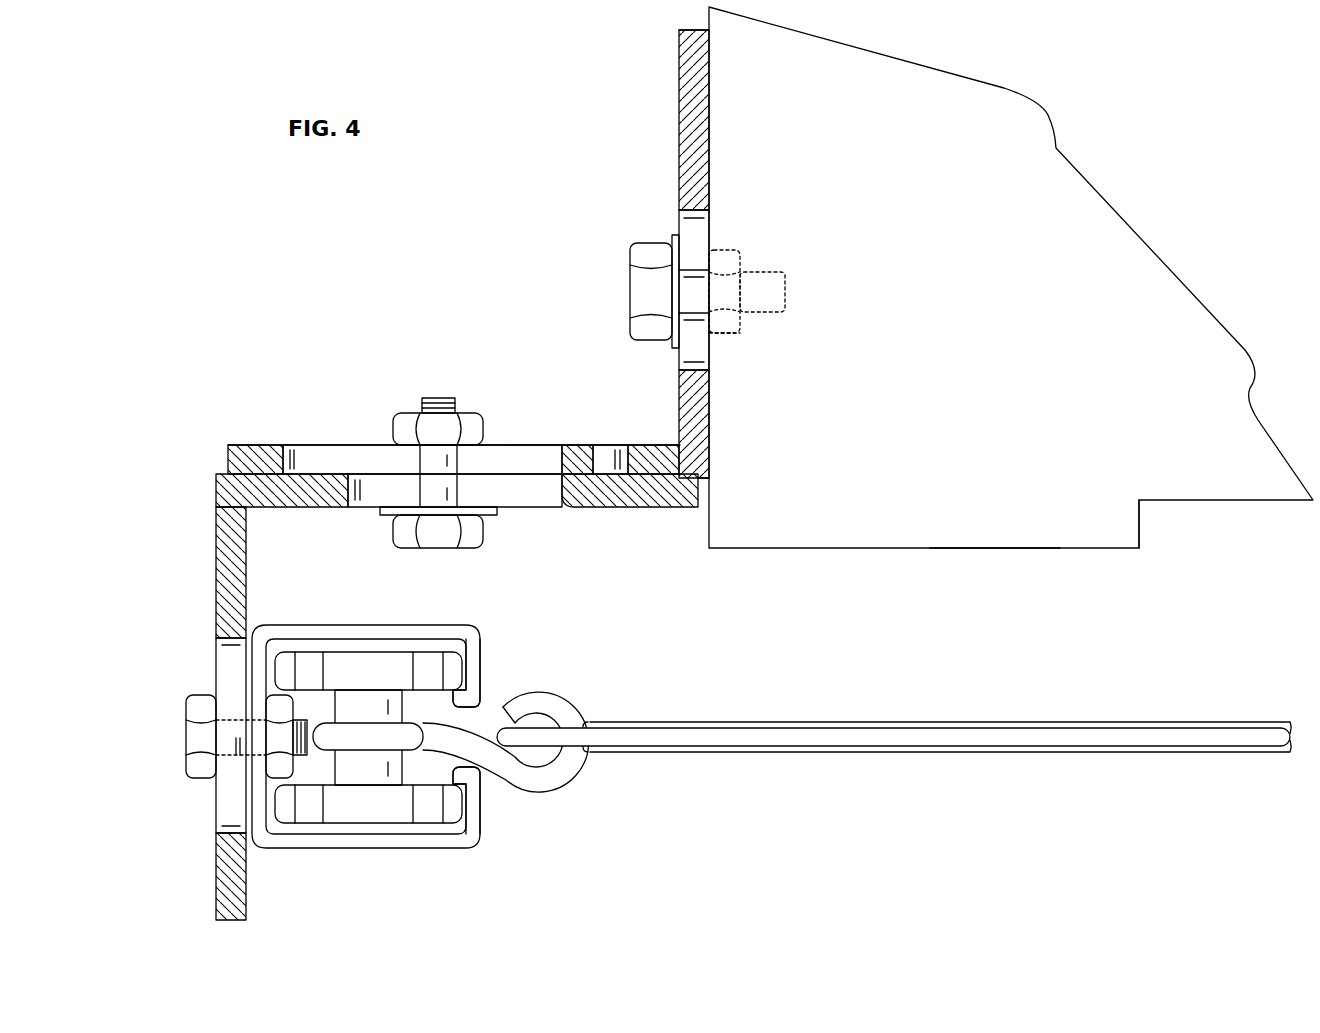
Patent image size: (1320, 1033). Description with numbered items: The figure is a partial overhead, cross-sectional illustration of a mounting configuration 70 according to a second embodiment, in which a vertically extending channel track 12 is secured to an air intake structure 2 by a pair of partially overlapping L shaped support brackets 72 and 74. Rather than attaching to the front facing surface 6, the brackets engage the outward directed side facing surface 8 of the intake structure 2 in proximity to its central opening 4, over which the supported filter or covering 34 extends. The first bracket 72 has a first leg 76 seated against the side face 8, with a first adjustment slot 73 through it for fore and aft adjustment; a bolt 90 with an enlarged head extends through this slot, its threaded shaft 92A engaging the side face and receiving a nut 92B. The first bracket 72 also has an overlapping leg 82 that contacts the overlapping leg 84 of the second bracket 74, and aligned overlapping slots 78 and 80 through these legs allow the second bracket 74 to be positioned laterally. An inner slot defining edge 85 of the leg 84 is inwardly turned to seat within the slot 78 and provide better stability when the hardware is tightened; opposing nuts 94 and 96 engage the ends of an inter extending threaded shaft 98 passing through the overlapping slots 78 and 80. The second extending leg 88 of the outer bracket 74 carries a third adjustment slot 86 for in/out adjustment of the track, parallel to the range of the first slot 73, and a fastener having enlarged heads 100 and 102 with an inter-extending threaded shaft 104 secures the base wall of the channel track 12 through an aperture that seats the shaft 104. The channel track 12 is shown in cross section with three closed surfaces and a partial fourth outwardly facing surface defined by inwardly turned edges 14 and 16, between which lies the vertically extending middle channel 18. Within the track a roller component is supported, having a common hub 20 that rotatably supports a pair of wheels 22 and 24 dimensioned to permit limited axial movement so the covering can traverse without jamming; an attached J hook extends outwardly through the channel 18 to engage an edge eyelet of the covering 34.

The air intake structure 2 is at (910, 211).
The central opening 4 is at (1208, 540).
The front facing surface 6 is at (1030, 548).
The side facing surface 8 is at (706, 20).
The channel track 12 is at (252, 680).
The inwardly turned edge 14 is at (482, 662).
The inwardly turned edge 16 is at (478, 805).
The middle channel 18 is at (471, 720).
The common hub 20 is at (343, 772).
The wheel 22 is at (371, 663).
The wheel 24 is at (392, 822).
The covering 34 is at (998, 753).
The mounting configuration 70 is at (548, 275).
The first L shaped support bracket 72 is at (672, 443).
The first adjustment slot 73 is at (679, 232).
The second L shaped support bracket 74 is at (216, 490).
The first leg 76 is at (679, 58).
The overlapping slot 78 is at (527, 456).
The overlapping slot 80 is at (527, 510).
The overlapping leg 82 is at (258, 447).
The overlapping leg 84 is at (308, 508).
The inner slot defining edge 85 is at (578, 452).
The third adjustment slot 86 is at (216, 640).
The second extending leg 88 is at (222, 866).
The bolt 90 is at (630, 295).
The threaded shaft 92A is at (757, 275).
The nut 92B is at (725, 340).
The nut 94 is at (400, 428).
The nut 96 is at (440, 540).
The threaded shaft 98 is at (436, 398).
The enlarged bolt head 100 is at (190, 740).
The enlarged head 102 is at (272, 775).
The threaded shaft 104 is at (232, 705).